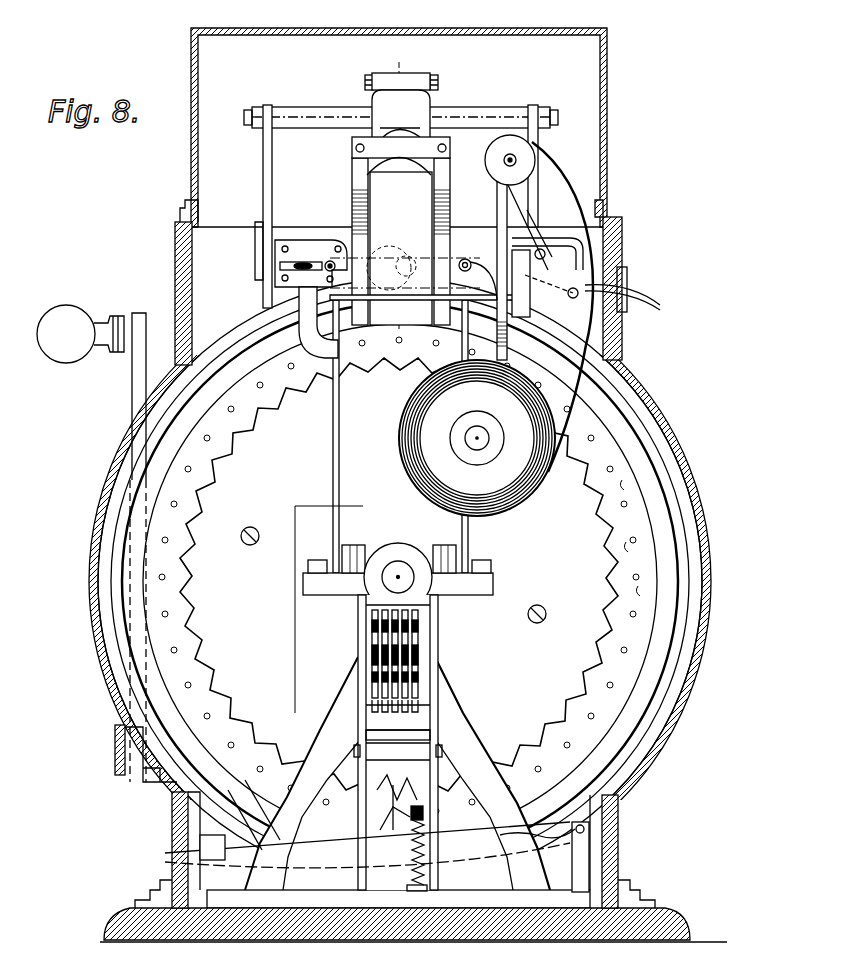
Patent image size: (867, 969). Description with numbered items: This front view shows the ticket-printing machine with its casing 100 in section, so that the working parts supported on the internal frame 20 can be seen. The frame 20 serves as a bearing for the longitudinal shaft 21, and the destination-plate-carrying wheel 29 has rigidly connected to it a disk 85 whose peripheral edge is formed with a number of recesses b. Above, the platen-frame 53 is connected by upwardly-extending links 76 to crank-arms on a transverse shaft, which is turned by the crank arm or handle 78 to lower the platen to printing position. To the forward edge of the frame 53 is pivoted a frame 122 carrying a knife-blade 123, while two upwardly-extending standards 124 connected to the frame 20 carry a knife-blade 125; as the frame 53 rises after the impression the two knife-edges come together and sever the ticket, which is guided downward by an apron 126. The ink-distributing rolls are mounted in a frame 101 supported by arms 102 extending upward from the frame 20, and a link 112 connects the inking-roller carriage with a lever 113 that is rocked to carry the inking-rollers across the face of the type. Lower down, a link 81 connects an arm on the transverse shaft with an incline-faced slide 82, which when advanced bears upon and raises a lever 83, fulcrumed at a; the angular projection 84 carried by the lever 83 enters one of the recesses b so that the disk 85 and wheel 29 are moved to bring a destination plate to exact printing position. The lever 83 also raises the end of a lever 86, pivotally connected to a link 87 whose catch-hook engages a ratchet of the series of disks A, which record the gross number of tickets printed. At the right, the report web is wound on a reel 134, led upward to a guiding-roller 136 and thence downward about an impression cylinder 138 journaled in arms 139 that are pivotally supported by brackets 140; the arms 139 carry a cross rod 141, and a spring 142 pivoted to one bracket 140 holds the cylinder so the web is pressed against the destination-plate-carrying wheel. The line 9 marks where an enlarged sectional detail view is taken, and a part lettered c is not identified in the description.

The casing 100 is at (398, 186).
The wheel 29 is at (726, 534).
The disk 85 is at (399, 577).
The crank arm or handle 78 is at (130, 383).
The links 76 is at (533, 105).
The frame 53 is at (372, 75).
The section line 9 is at (348, 384).
The frame 122 is at (401, 105).
The knife-blade 125 is at (400, 135).
The knife-blade 123 is at (401, 156).
The standards 124 is at (350, 212).
The apron 126 is at (401, 248).
The frame 101 is at (311, 263).
The arms 102 is at (313, 331).
The frame 20 is at (397, 595).
The longitudinal shaft 21 is at (398, 562).
The reel 134 is at (477, 438).
The brackets 140 is at (521, 255).
The guiding-roller 136 is at (535, 160).
The impression cylinder or roller 138 is at (561, 225).
The cross rod or bar 141 is at (540, 236).
The spring 142 is at (583, 252).
The arms 139 is at (545, 283).
The link 112 is at (464, 258).
The lever 113 is at (486, 262).
The cord c is at (609, 335).
The series of disks A is at (438, 646).
The angular projection 84 is at (403, 829).
The link 87 is at (430, 802).
The lever 86 is at (400, 820).
The incline-faced slide 82 is at (200, 852).
The link 81 is at (285, 770).
The lever 83 is at (296, 780).
The fulcrum a is at (544, 857).
The recesses b is at (523, 633).